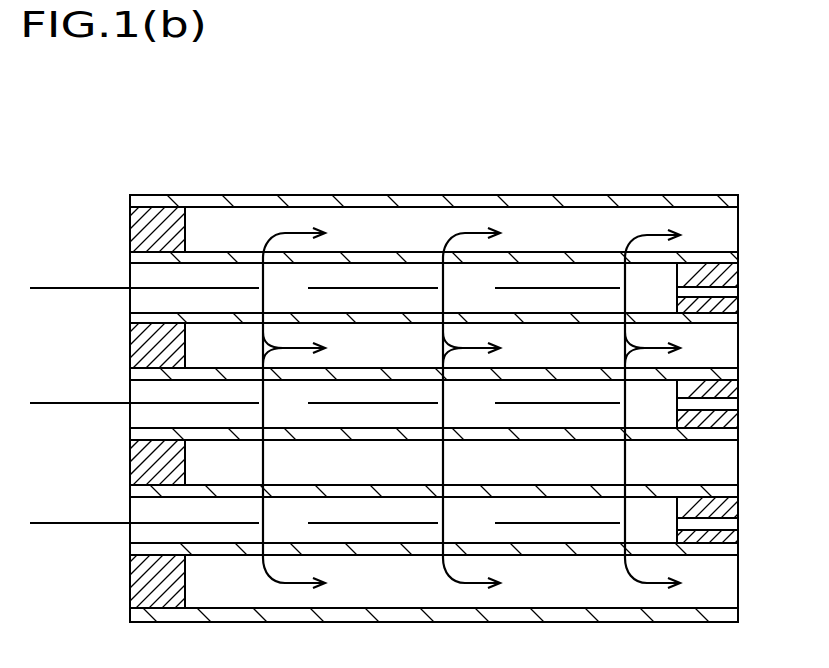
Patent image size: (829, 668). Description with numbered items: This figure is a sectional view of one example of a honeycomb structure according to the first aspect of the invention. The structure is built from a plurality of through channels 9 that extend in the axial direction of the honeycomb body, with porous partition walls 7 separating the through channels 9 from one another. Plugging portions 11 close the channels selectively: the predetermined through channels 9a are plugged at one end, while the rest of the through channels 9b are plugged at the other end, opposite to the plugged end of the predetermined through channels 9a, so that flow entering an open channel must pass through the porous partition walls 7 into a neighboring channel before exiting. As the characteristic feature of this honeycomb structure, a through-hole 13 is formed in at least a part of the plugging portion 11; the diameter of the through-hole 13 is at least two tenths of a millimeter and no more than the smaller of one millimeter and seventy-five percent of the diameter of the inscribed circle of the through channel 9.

The porous partition wall 7 is at (585, 260).
The through channel 9 is at (403, 130).
The predetermined through channel 9a is at (335, 225).
The rest of through channels 9b is at (388, 287).
The plugging portion 11 is at (137, 350).
The through-hole 13 is at (703, 290).